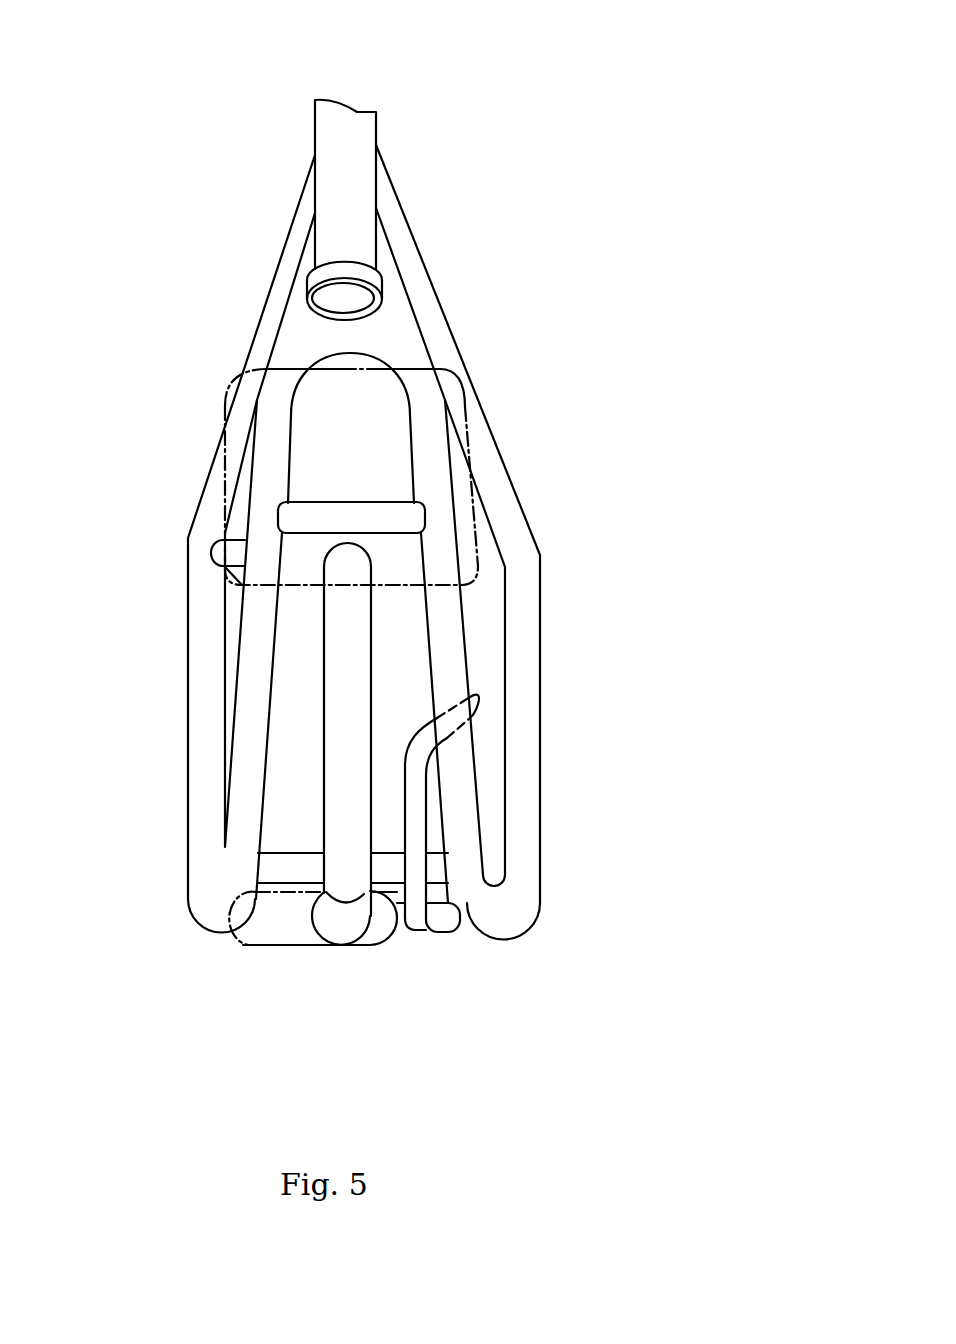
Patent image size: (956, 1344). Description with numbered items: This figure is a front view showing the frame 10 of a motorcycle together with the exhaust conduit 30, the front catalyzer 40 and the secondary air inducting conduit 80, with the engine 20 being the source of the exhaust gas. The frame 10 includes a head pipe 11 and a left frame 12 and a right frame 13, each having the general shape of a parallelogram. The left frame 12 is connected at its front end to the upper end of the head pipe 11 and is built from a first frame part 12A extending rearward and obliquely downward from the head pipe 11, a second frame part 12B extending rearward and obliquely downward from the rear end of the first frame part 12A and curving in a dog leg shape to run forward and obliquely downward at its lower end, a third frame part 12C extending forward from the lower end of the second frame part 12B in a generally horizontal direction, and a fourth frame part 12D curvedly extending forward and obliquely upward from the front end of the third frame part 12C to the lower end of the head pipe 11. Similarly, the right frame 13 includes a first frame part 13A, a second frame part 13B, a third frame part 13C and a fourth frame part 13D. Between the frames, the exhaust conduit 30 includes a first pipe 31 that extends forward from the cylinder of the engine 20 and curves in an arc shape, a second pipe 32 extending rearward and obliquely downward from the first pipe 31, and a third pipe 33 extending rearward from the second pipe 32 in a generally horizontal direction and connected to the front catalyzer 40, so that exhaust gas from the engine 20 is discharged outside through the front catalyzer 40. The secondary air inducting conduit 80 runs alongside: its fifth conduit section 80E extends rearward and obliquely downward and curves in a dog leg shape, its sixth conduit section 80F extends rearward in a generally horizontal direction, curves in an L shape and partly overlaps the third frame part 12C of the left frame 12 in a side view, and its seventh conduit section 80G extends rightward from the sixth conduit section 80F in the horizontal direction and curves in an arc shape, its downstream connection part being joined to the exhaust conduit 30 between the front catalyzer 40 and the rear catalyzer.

The frame 10 is at (418, 180).
The head pipe 11 is at (355, 125).
The left frame 12 is at (291, 225).
The first frame part 12A is at (243, 440).
The second frame part 12B is at (200, 715).
The third frame part 12C is at (208, 915).
The fourth frame part 12D is at (252, 650).
The right frame 13 is at (413, 238).
The first frame part 13A is at (483, 445).
The second frame part 13B is at (525, 680).
The third frame part 13C is at (513, 920).
The fourth frame part 13D is at (460, 640).
The engine 20 is at (407, 365).
The exhaust conduit 30 is at (372, 813).
The first pipe 31 is at (350, 563).
The second pipe 32 is at (340, 780).
The third pipe 33 is at (335, 928).
The front catalyzer 40 is at (268, 928).
The secondary air inducting conduit 80 is at (458, 928).
The fifth conduit section 80E is at (415, 827).
The sixth conduit section 80F is at (437, 934).
The seventh conduit section 80G is at (407, 927).